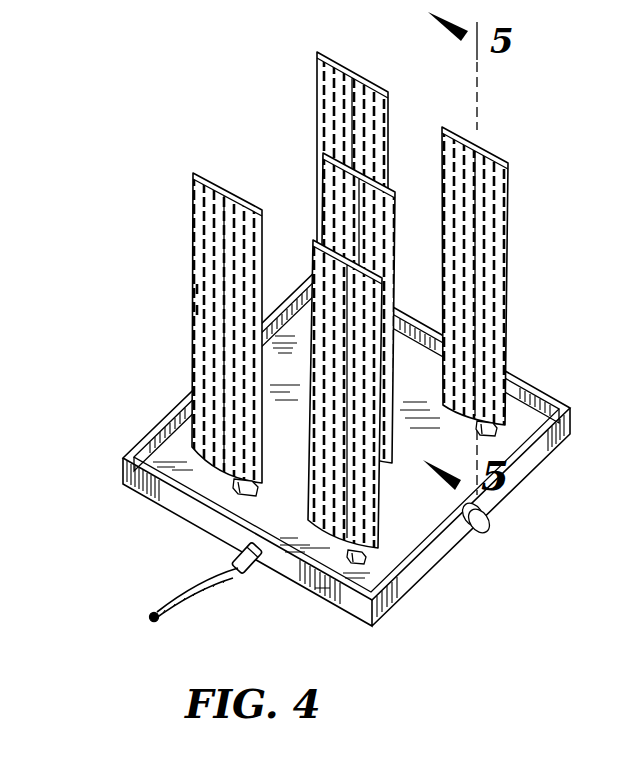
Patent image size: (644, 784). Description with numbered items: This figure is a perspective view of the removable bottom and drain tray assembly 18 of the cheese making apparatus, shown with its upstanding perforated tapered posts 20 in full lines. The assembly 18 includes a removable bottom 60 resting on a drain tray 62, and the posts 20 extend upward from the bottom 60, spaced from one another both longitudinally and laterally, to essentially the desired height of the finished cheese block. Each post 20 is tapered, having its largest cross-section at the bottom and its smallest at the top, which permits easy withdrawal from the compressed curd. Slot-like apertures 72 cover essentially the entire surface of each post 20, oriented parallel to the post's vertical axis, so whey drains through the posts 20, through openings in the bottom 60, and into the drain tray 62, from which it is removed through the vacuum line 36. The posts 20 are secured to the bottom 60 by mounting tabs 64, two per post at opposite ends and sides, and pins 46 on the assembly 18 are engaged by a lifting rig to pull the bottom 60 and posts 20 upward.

The removable bottom and drain tray assembly 18 is at (316, 452).
The upstanding perforated tapered post 20 is at (193, 245).
The vacuum line 36 is at (197, 585).
The pin 46 is at (478, 534).
The removable bottom 60 is at (423, 511).
The drain tray 62 is at (395, 590).
The mounting tab 64 is at (251, 493).
The slot-like aperture 72 is at (194, 312).